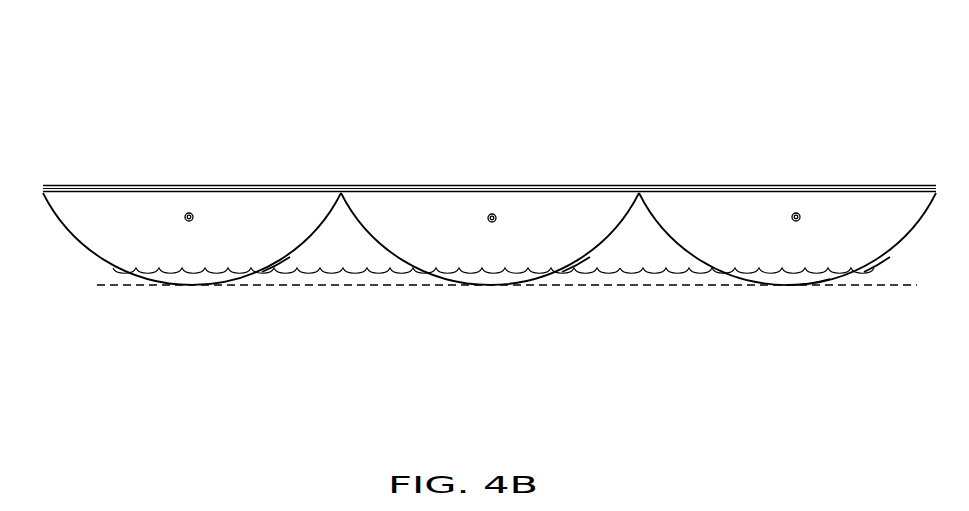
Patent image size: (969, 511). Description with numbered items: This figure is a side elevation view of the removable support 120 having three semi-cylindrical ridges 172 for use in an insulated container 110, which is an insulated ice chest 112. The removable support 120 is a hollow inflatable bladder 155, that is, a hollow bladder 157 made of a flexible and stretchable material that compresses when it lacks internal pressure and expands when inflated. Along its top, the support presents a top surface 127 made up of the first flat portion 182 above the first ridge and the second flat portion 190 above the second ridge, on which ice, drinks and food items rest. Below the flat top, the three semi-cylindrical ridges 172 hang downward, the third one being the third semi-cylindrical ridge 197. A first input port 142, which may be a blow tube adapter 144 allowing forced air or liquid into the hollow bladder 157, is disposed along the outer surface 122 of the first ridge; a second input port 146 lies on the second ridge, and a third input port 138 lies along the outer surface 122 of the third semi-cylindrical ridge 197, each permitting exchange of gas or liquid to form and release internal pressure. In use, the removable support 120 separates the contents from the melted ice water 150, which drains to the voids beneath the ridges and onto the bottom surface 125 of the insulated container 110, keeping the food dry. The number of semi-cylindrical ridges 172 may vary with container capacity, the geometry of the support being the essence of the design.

The removable support 120 is at (508, 59).
The first flat portion 182 is at (112, 184).
The top surface 127 is at (418, 184).
The second flat portion 190 is at (448, 184).
The first input port 142 is at (194, 213).
The second input port 146 is at (497, 216).
The third input port 138 is at (803, 213).
The blow tube adapter 144 is at (185, 221).
The hollow bladder 157 is at (93, 258).
The third semi-cylindrical ridge 197 is at (728, 249).
The semi-cylindrical ridges 172 is at (276, 263).
The outer surface 122 is at (815, 257).
The inflatable bladder 155 is at (140, 274).
The melted ice water 150 is at (621, 272).
The bottom surface 125 is at (368, 287).
The insulated ice chest 112 is at (652, 287).
The insulated container 110 is at (705, 287).